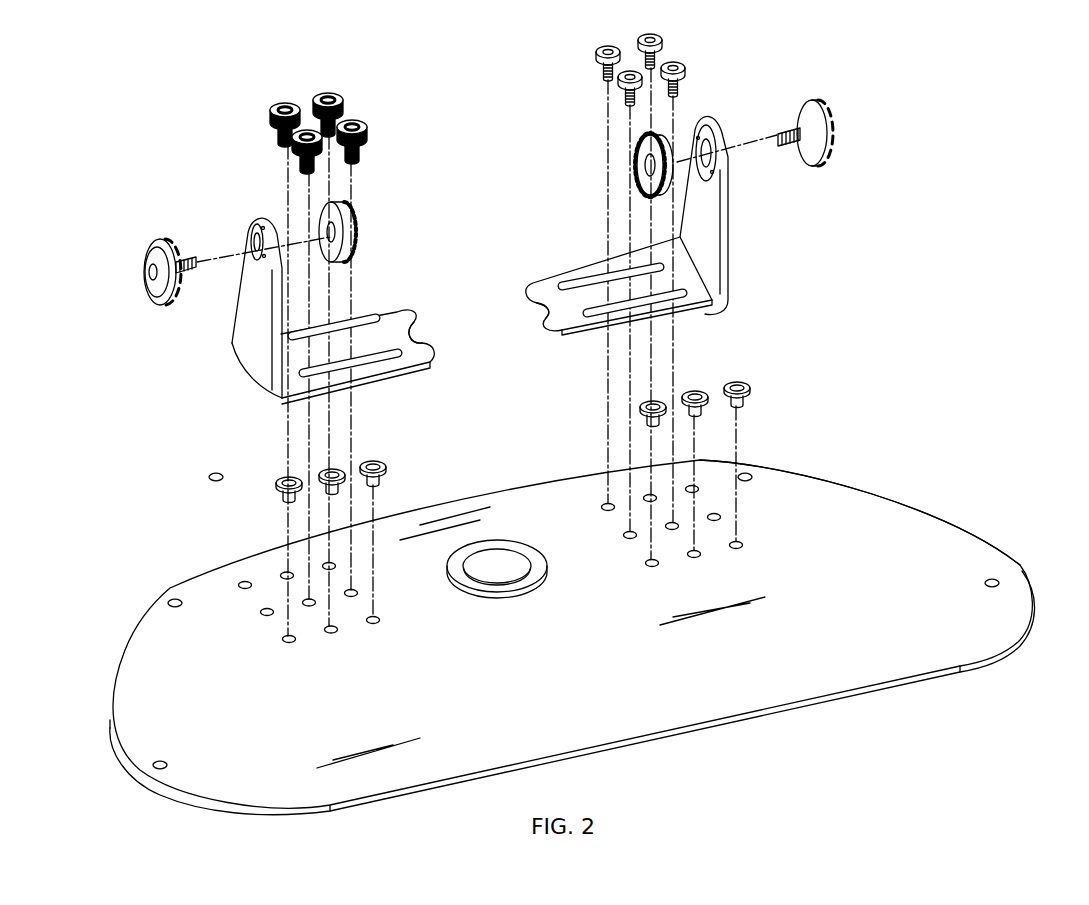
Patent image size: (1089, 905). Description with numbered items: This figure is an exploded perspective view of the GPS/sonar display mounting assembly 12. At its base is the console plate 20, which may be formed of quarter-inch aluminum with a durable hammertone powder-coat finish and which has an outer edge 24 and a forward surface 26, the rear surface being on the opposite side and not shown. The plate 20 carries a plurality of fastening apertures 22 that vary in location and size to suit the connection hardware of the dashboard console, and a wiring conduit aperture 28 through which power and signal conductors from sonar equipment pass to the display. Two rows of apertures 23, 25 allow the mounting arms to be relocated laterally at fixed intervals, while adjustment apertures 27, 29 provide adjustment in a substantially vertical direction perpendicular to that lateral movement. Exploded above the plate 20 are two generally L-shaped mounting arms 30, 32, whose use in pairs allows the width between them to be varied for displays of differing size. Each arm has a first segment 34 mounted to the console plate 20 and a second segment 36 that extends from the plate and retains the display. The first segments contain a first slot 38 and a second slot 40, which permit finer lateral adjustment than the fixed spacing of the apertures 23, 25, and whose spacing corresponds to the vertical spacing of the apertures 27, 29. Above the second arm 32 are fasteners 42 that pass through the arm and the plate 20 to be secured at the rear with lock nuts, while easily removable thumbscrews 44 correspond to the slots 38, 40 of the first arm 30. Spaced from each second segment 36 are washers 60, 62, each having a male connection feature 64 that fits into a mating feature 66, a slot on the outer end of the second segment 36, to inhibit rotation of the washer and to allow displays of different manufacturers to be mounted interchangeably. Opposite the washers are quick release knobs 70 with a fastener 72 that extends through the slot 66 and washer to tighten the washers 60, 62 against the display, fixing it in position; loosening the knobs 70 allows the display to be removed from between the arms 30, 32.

The mounting assembly 12 is at (960, 123).
The console plate 20 is at (760, 672).
The fastening apertures 22 is at (175, 600).
The apertures 23 is at (373, 624).
The outer edge 24 is at (900, 502).
The apertures 25 is at (375, 469).
The forward surface 26 is at (824, 594).
The adjustment apertures 27 is at (290, 641).
The wiring conduit aperture 28 is at (500, 584).
The adjustment apertures 29 is at (651, 560).
The mounting arm 30 is at (260, 194).
The mounting arm 32 is at (716, 130).
The first segment 34 is at (394, 330).
The second segment 36 is at (258, 347).
The first slot 38 is at (346, 330).
The second slot 40 is at (400, 360).
The fasteners 42 is at (676, 62).
The thumbscrews 44 is at (350, 122).
The washer 60 is at (358, 197).
The washer 62 is at (632, 153).
The connection feature 64 is at (326, 222).
The mating feature 66 is at (250, 225).
The quick release knobs 70 is at (147, 290).
The fastener 72 is at (186, 280).